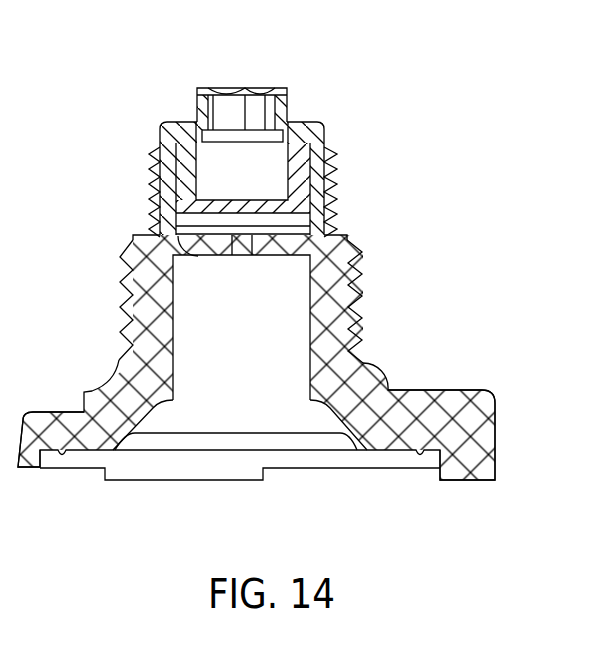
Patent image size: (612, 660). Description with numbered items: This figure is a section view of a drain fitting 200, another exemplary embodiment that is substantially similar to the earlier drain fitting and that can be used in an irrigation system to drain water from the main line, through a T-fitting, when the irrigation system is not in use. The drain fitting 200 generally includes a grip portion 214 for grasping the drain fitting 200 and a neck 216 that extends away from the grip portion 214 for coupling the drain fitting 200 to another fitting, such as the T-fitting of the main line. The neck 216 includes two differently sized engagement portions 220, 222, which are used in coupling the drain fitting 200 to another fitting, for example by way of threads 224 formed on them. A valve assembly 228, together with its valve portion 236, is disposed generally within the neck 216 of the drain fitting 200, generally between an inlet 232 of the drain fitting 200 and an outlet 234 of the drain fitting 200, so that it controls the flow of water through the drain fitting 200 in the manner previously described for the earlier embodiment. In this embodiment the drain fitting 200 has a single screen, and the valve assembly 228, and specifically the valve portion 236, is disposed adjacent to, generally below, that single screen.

The drain fitting 200 is at (87, 98).
The grip portion 214 is at (497, 432).
The neck 216 is at (425, 263).
The engagement portion 220 is at (153, 163).
The engagement portion 222 is at (365, 347).
The threads 224 is at (127, 318).
The valve assembly 228 is at (292, 221).
The inlet 232 is at (304, 124).
The outlet 234 is at (248, 236).
The valve portion 236 is at (170, 247).